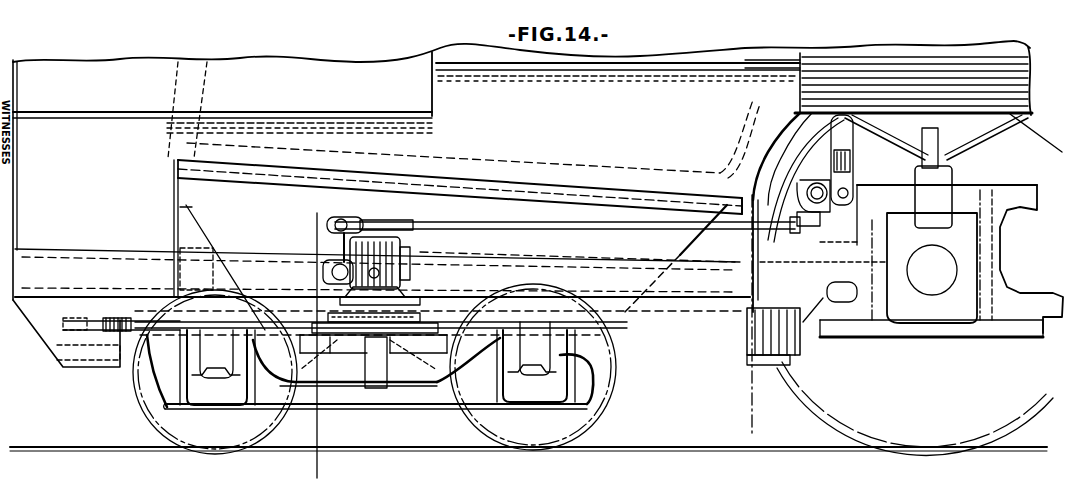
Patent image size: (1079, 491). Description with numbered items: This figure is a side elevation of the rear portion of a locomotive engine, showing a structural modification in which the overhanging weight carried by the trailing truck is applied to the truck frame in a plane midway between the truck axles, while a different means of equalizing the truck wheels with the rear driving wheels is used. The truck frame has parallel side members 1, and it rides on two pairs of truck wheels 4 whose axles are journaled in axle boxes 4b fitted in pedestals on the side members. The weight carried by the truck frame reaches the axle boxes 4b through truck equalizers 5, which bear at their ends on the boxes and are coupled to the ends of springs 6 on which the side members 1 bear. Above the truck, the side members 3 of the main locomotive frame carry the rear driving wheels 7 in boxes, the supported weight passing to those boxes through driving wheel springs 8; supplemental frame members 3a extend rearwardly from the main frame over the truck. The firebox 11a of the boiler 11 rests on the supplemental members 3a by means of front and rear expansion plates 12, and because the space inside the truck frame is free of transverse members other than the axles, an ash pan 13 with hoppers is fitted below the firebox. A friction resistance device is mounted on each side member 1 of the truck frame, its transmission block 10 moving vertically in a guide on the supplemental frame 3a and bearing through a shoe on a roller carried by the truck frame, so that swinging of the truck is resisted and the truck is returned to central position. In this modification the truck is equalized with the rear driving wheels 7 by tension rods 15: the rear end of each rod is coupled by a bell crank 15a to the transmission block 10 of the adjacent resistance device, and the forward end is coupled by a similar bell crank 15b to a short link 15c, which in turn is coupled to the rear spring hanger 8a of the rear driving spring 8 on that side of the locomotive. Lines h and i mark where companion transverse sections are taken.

The side members of truck frame 1 is at (306, 323).
The side members of main frame 3 is at (1012, 214).
The supplemental frame members 3a is at (577, 266).
The truck wheels 4 is at (155, 425).
The axle boxes 4b is at (190, 364).
The truck equalizers 5 is at (352, 386).
The springs 6 is at (440, 388).
The rear driving wheels 7 is at (835, 416).
The driving wheel springs 8 is at (976, 150).
The rear spring hanger 8a is at (832, 150).
The transmission block 10 is at (412, 291).
The boiler 11 is at (918, 54).
The firebox 11a is at (412, 205).
The expansion plates 12 is at (174, 191).
The ash pan 13 is at (190, 232).
The tension rods 15 is at (672, 232).
The bell crank 15a is at (335, 242).
The bell crank 15b is at (830, 210).
The short link 15c is at (850, 168).
The section line h h is at (306, 339).
The section line i i is at (746, 306).